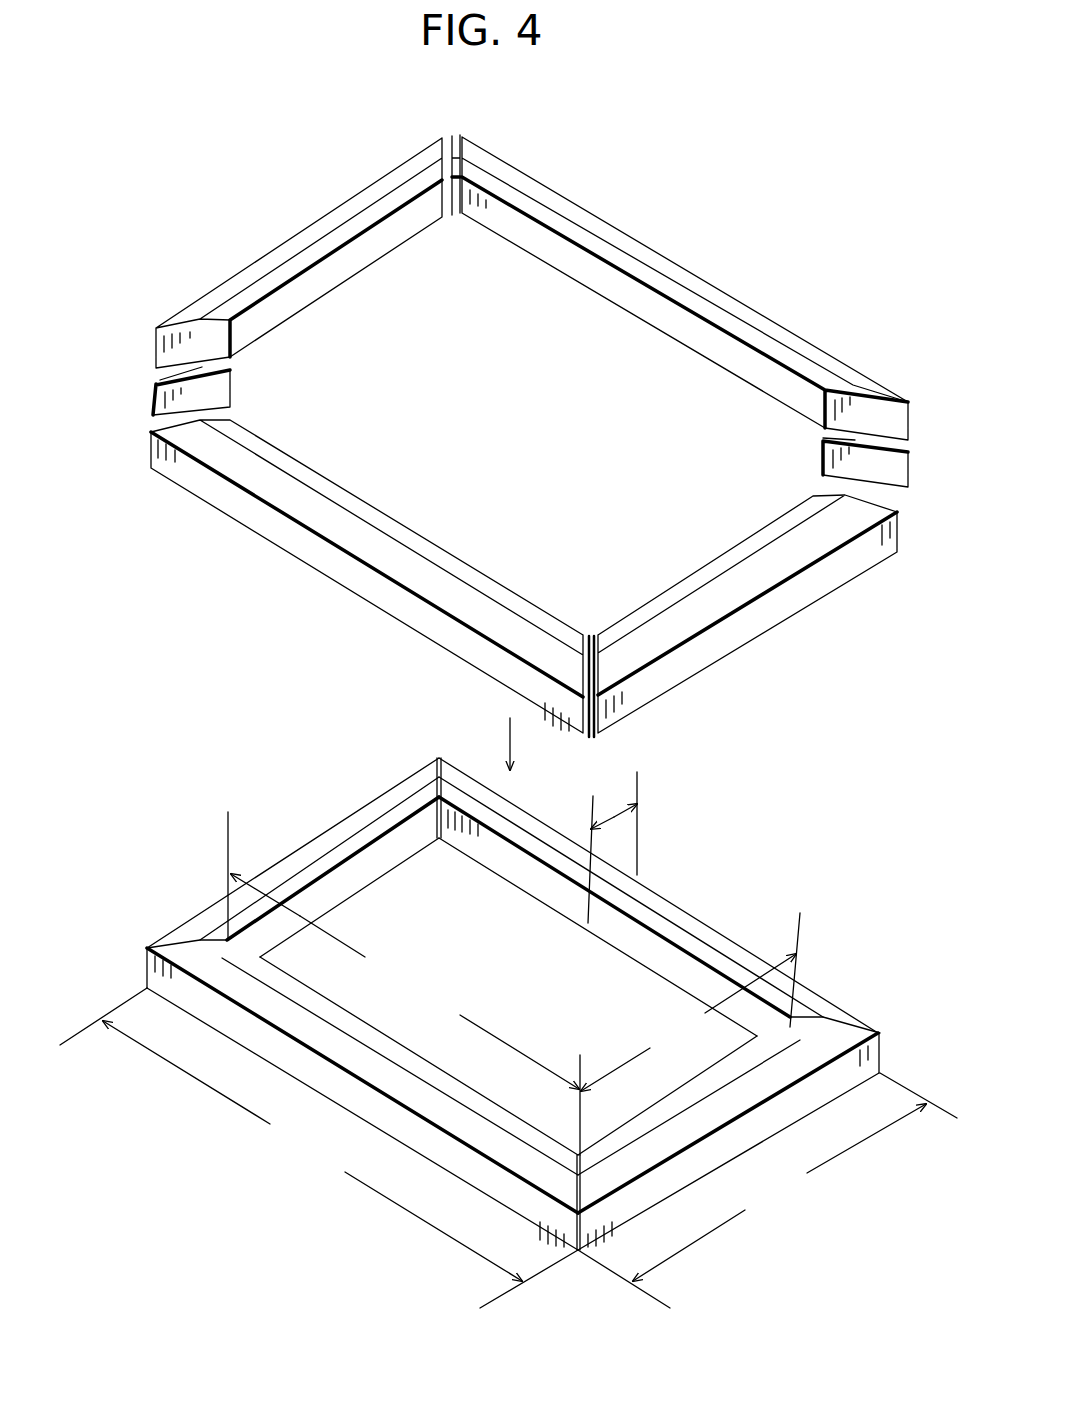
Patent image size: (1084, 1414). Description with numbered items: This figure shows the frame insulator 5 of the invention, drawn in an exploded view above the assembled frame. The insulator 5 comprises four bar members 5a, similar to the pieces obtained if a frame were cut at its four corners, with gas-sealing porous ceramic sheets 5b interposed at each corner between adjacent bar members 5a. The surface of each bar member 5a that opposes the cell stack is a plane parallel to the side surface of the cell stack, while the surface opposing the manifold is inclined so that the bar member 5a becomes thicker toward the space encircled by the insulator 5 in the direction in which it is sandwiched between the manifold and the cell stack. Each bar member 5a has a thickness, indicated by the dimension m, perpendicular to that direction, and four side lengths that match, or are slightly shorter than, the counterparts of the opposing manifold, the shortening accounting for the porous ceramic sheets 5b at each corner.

The frame insulator 5 is at (699, 1191).
The bar member 5a is at (738, 577).
The gas-sealing porous ceramic sheet 5b is at (823, 455).